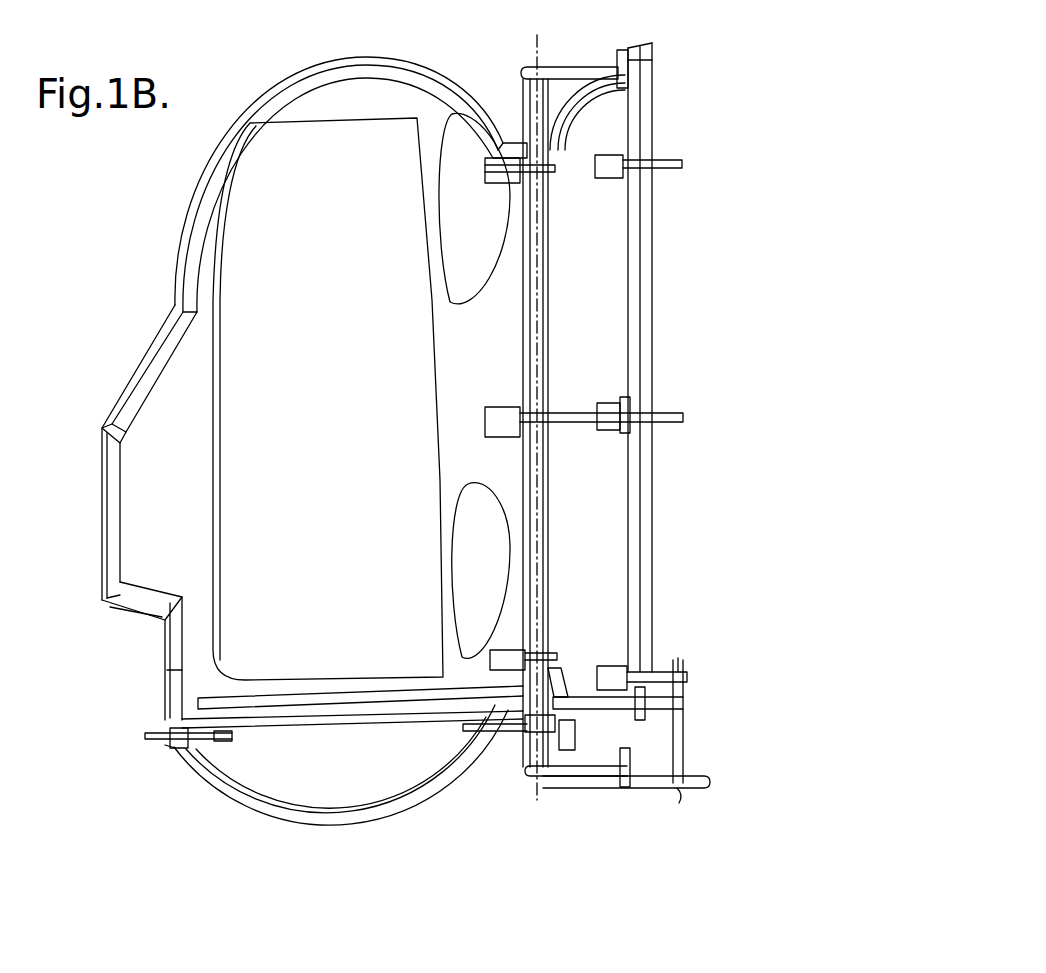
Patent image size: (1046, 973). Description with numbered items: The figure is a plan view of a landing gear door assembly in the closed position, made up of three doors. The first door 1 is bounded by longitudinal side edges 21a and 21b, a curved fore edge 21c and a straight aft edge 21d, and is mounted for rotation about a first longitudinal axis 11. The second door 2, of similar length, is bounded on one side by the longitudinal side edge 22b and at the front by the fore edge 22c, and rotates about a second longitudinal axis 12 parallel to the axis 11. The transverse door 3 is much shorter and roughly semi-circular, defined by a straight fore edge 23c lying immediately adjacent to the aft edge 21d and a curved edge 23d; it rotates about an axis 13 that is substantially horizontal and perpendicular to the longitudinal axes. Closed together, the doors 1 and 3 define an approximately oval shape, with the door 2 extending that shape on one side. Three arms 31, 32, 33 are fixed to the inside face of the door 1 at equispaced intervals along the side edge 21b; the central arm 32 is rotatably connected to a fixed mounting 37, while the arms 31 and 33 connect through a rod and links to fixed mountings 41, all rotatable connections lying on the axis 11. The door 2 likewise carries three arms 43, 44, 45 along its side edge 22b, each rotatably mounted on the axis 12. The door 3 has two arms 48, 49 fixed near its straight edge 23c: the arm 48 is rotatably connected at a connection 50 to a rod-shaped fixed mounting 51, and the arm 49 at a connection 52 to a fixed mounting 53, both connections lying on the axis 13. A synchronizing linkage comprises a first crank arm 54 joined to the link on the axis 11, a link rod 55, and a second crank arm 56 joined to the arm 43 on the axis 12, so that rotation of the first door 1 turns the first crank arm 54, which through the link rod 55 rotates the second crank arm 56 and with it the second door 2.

The first door 1 is at (336, 425).
The second door 2 is at (649, 419).
The transverse door 3 is at (341, 781).
The first longitudinal axis 11 is at (536, 38).
The second longitudinal axis 12 is at (678, 803).
The axis 13 is at (145, 736).
The longitudinal side edge 21a is at (176, 245).
The longitudinal side edge 21b is at (528, 345).
The curved fore edge 21c is at (343, 62).
The straight aft edge 21d is at (170, 700).
The longitudinal side edge 22b is at (656, 262).
The fore edge 22c is at (648, 43).
The straight fore edge 23c is at (175, 716).
The curved edge 23d is at (352, 826).
The arm 31 is at (483, 180).
The central arm 32 is at (567, 439).
The arm 33 is at (488, 660).
The fixed mounting 37 is at (620, 432).
The fixed mounting 41 is at (622, 50).
The arm 43 is at (668, 170).
The arm 44 is at (668, 420).
The arm 45 is at (660, 668).
The arm 48 is at (228, 745).
The arm 49 is at (465, 732).
The connection 50 is at (178, 750).
The rod-shaped fixed mounting 51 is at (170, 748).
The connection 52 is at (524, 735).
The fixed mounting 53 is at (665, 706).
The first crank arm 54 is at (562, 790).
The link rod 55 is at (708, 784).
The second crank arm 56 is at (690, 737).